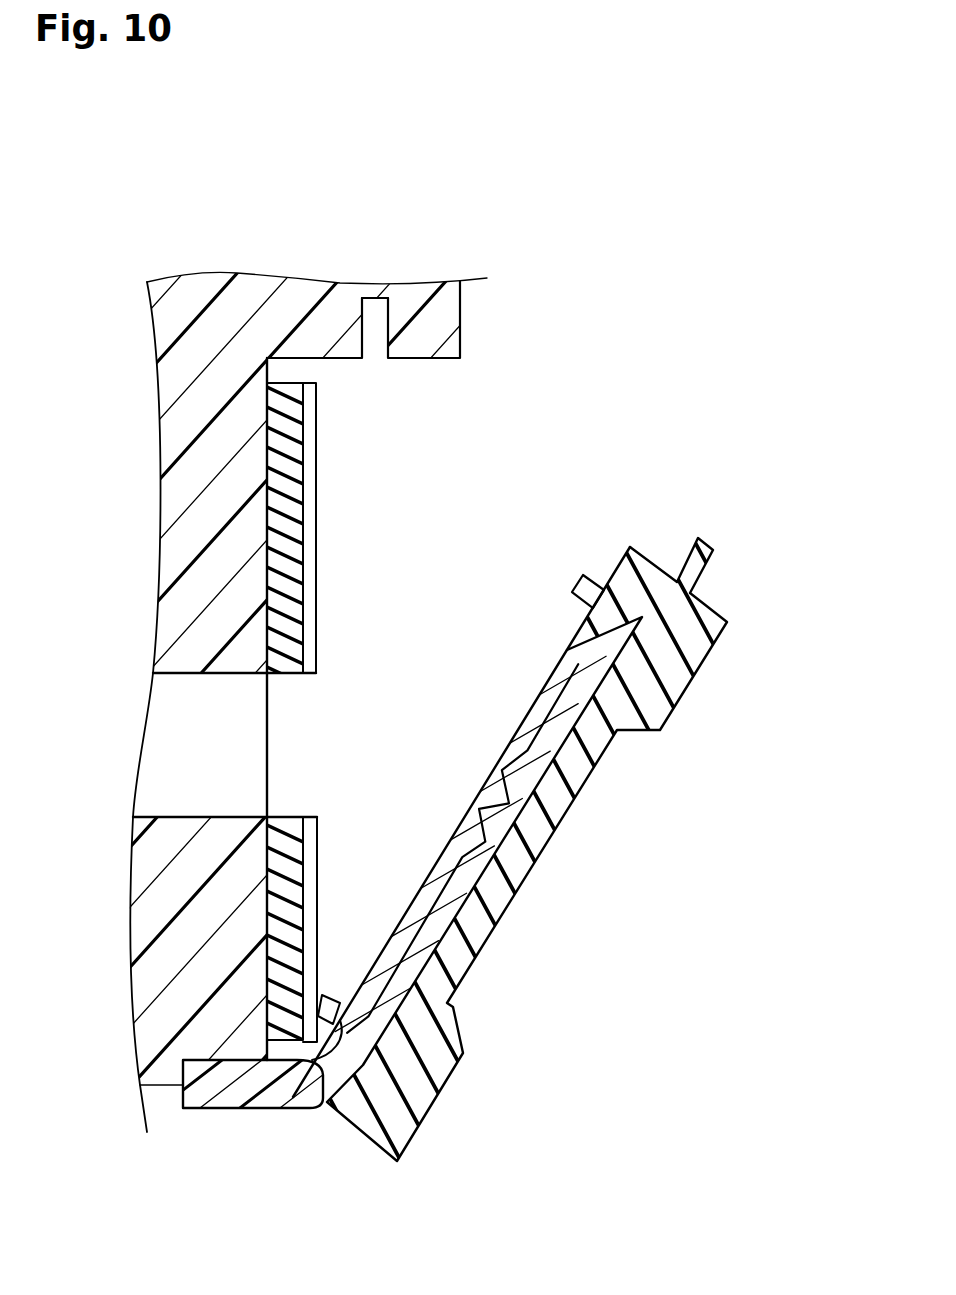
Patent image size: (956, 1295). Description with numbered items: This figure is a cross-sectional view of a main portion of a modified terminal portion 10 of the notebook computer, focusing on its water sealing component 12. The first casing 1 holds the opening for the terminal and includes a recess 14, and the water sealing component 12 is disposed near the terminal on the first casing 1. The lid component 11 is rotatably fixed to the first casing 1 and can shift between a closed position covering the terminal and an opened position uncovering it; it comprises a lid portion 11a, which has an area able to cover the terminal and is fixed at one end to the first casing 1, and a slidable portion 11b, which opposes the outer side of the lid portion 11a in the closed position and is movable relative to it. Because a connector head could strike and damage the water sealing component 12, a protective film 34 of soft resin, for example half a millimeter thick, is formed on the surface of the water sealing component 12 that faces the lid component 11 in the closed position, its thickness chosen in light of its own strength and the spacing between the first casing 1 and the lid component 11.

The first casing 1 is at (462, 322).
The recess 14 is at (372, 298).
The water sealing component 12 is at (288, 413).
The protective film 34 is at (316, 492).
The lid component 11 is at (538, 822).
The lid portion 11a is at (531, 822).
The slidable portion 11b is at (663, 643).
The terminal portion 10 is at (668, 303).